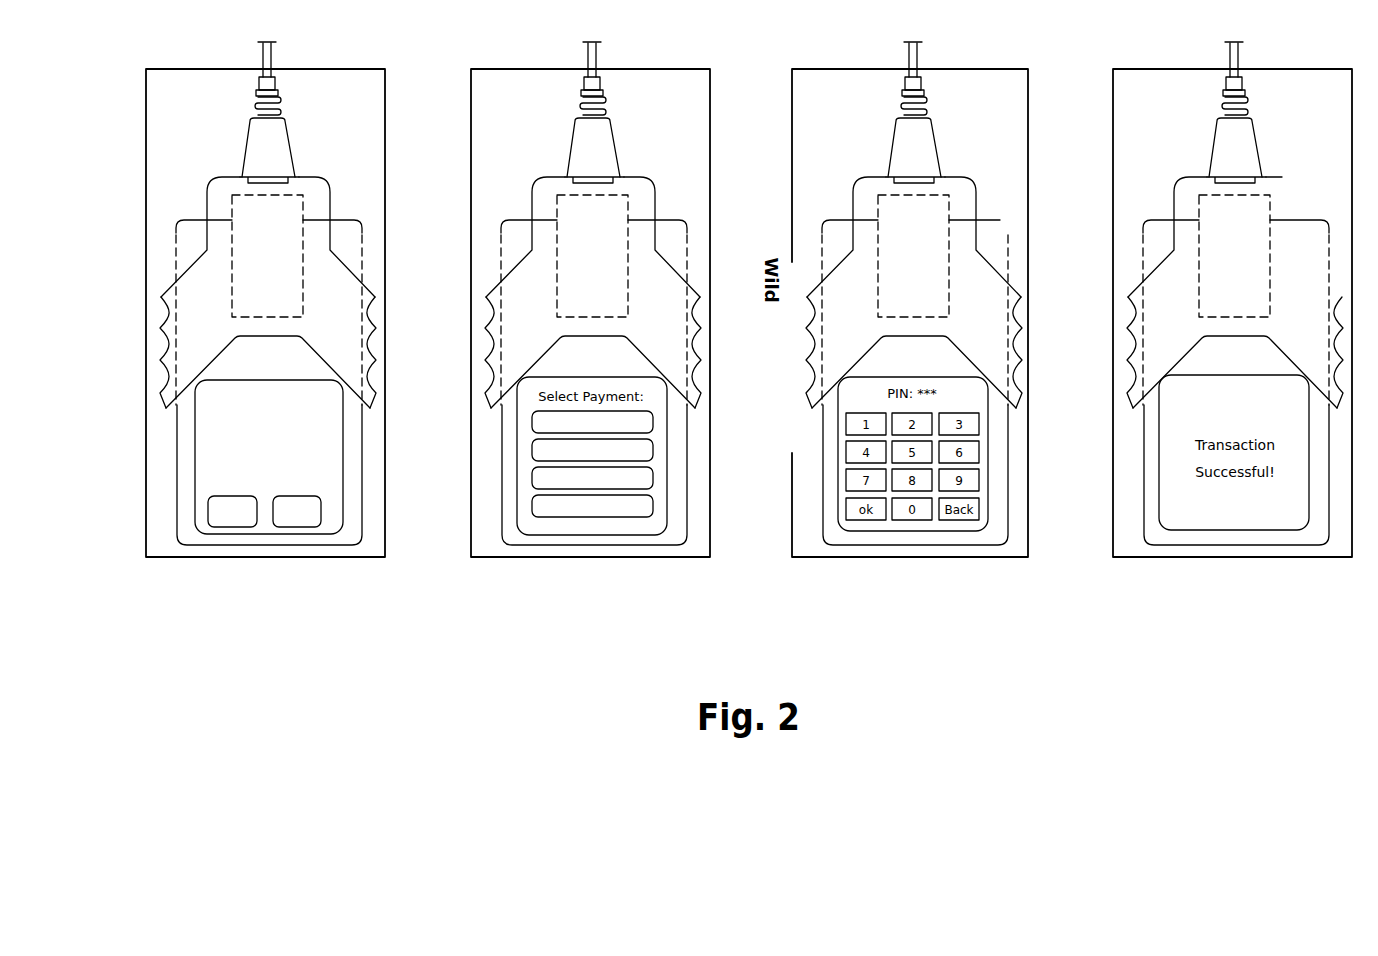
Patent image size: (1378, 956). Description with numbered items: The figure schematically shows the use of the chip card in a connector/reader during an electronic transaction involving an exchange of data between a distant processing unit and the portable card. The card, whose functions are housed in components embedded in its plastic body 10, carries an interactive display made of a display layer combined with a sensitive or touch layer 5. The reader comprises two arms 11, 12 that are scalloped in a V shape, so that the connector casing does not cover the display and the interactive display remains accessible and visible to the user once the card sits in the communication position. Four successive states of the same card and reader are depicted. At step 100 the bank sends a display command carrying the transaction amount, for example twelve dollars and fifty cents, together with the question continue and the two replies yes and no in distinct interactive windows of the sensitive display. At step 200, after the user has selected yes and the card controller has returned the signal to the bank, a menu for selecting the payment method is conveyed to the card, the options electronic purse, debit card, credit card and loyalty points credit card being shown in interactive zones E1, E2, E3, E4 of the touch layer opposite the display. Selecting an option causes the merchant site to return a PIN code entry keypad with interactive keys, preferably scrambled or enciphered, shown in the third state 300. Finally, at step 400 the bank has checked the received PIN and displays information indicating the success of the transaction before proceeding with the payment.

The amount display step 100 is at (268, 557).
The payment method selection step 200 is at (593, 557).
The third terminal screen state (PIN entry) 300 is at (913, 557).
The transaction success step 400 is at (1233, 557).
The arm 11 is at (207, 320).
The arm 12 is at (328, 318).
The touch layer 5 is at (197, 453).
The plastic body 10 is at (185, 508).
The interactive zone E1 is at (532, 422).
The interactive zone E2 is at (532, 450).
The interactive zone E3 is at (532, 478).
The interactive zone E4 is at (532, 506).